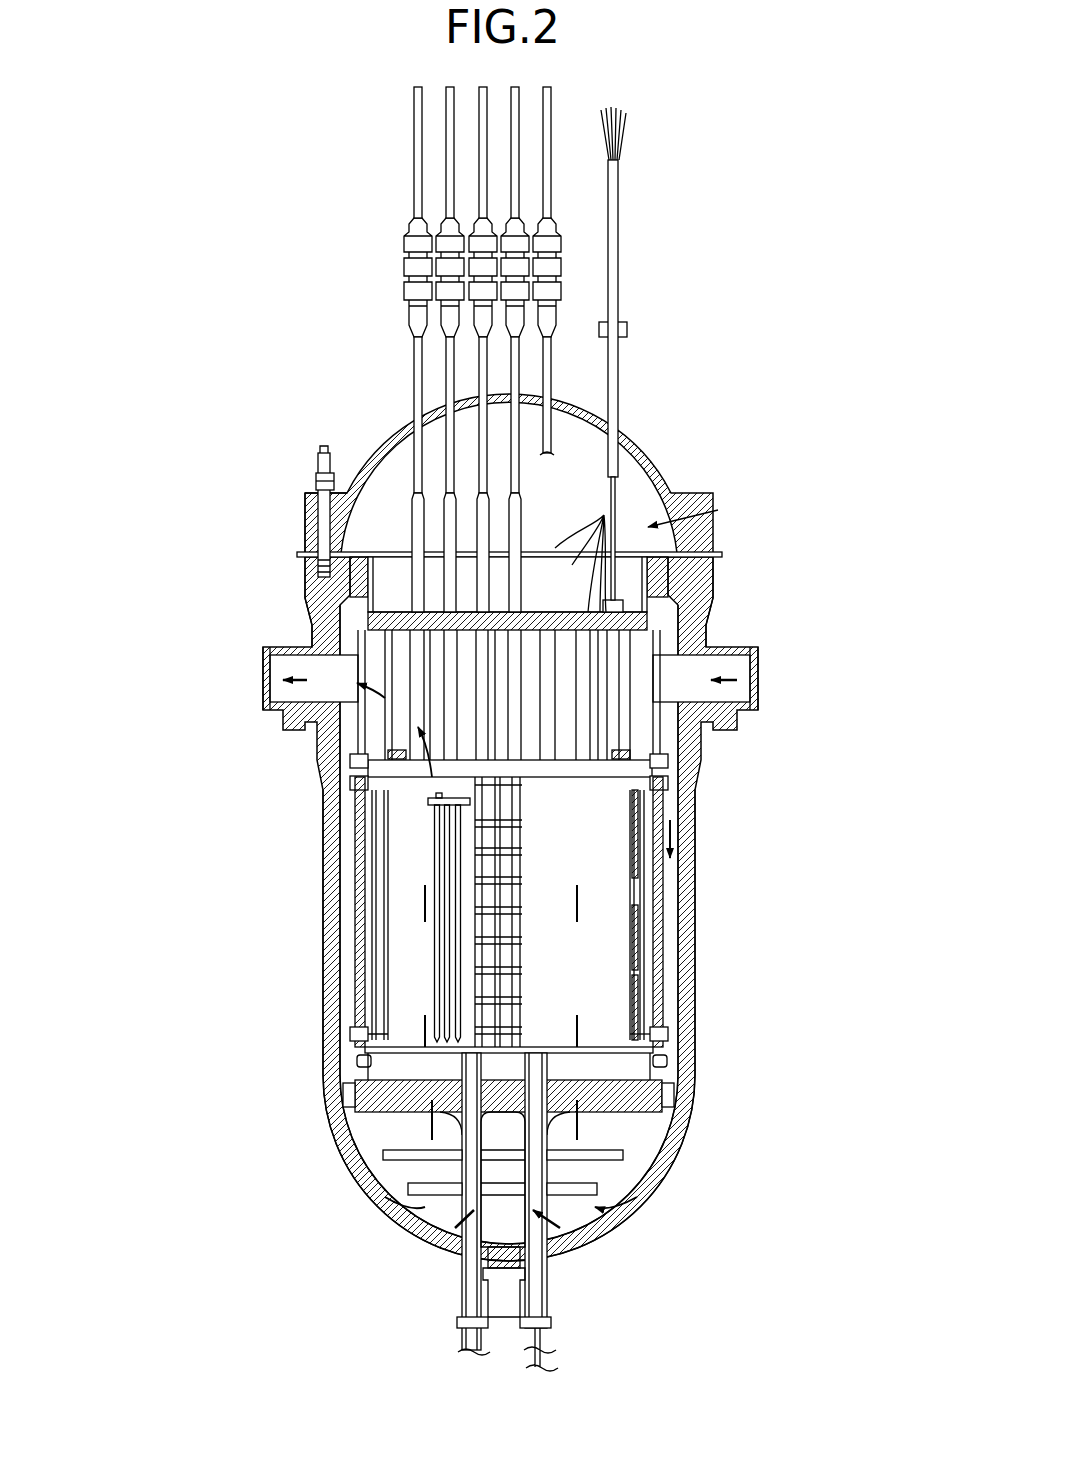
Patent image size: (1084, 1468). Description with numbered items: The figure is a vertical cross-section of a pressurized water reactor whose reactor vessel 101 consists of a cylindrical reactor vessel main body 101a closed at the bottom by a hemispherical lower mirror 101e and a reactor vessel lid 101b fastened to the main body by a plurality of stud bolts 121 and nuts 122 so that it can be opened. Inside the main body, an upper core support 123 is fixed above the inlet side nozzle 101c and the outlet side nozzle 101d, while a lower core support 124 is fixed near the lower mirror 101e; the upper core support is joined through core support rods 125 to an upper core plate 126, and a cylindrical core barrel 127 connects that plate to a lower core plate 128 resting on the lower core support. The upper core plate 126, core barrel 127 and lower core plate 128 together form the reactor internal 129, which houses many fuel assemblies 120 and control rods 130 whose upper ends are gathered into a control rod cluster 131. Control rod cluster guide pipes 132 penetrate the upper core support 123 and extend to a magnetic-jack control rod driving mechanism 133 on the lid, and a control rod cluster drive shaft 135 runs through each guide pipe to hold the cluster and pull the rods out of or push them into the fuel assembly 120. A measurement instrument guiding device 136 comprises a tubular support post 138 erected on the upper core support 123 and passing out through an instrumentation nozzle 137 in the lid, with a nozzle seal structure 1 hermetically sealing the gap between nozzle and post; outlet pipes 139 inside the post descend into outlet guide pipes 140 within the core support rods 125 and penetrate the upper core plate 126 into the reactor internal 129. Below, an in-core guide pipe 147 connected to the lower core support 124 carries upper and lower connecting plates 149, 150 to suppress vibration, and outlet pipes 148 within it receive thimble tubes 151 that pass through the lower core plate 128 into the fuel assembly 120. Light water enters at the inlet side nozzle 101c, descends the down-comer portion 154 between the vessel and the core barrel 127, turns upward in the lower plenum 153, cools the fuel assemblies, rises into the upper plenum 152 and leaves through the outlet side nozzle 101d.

The nozzle seal structure 1 is at (545, 814).
The reactor vessel 101 is at (718, 570).
The reactor vessel main body 101a is at (700, 852).
The reactor vessel lid 101b is at (667, 472).
The inlet side nozzle 101c is at (725, 693).
The outlet side nozzle 101d is at (263, 686).
The lower mirror 101e is at (578, 1220).
The fuel assembly 120 is at (520, 830).
The stud bolt 121 is at (313, 508).
The nut 122 is at (316, 476).
The upper core support 123 is at (450, 510).
The lower core support 124 is at (378, 1112).
The core support rod 125 is at (312, 632).
The upper core plate 126 is at (650, 752).
The core barrel 127 is at (655, 908).
The lower core plate 128 is at (368, 1066).
The reactor internal 129 is at (595, 968).
The control rod 130 is at (432, 818).
The control rod cluster 131 is at (450, 782).
The control rod cluster guide pipe 132 is at (432, 595).
The control rod driving mechanism 133 is at (384, 212).
The control rod cluster drive shaft 135 is at (450, 357).
The measurement instrument guiding device 136 is at (712, 498).
The instrumentation nozzle 137 is at (622, 348).
The support post 138 is at (612, 222).
The outlet pipe 139 is at (623, 122).
The outlet guide pipe 140 is at (640, 738).
The in-core guide pipe 147 is at (548, 1173).
The outlet pipe 148 is at (466, 1335).
The upper connecting plate 149 is at (615, 1155).
The lower connecting plate 150 is at (587, 1188).
The thimble tube 151 is at (548, 1352).
The upper plenum 152 is at (273, 658).
The lower plenum 153 is at (600, 1245).
The down-comer portion 154 is at (668, 1020).